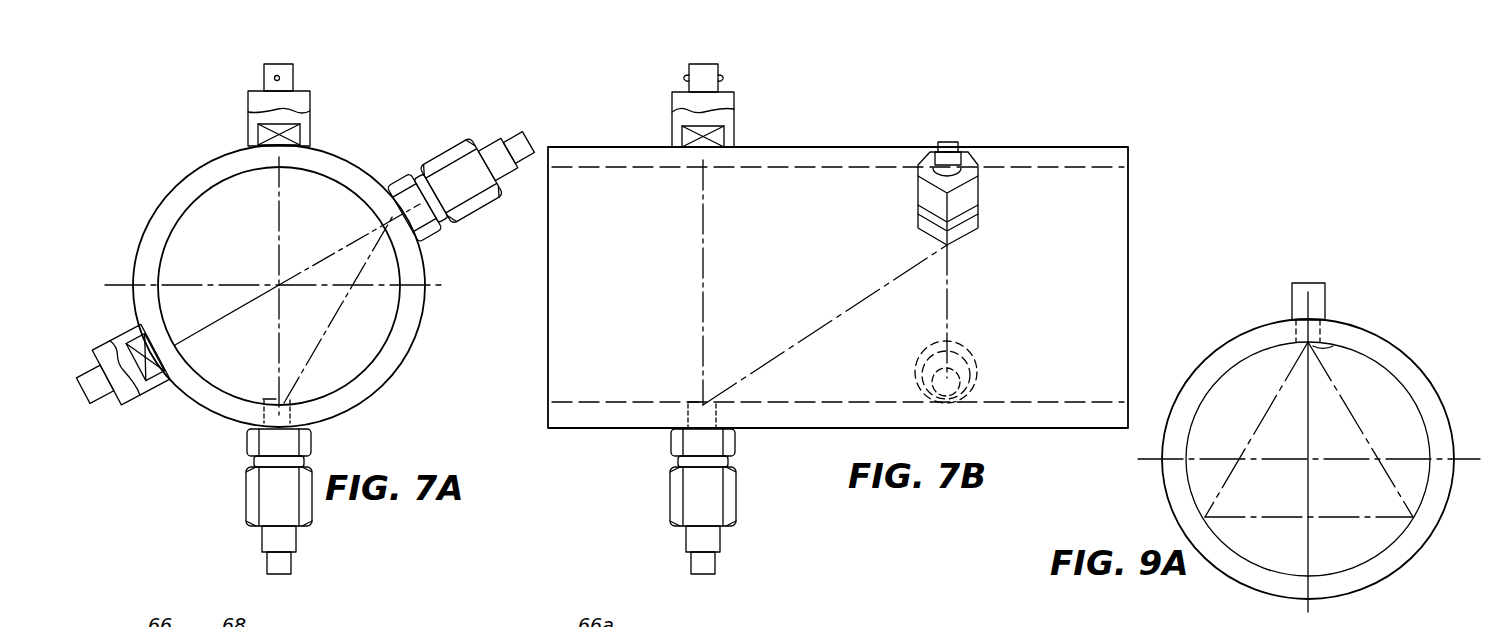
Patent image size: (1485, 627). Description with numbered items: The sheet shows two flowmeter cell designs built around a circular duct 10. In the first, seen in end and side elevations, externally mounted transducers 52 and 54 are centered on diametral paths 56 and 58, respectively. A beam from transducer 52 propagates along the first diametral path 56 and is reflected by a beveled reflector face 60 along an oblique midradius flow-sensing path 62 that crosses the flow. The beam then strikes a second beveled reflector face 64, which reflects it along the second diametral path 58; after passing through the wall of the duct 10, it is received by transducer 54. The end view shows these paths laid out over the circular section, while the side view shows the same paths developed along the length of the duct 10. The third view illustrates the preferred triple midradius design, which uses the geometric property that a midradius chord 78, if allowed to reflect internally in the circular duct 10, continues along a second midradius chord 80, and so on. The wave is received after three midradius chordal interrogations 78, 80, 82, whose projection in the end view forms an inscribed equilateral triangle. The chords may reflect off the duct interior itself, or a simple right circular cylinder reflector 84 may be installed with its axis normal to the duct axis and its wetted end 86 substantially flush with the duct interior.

In FIG. 7A, the duct 10 is at (216, 406).
In FIG. 7B, the duct 10 is at (548, 362).
In FIG. 9A, the duct 10 is at (1436, 536).
In FIG. 7A, the externally mounted transducer 52 is at (248, 138).
In FIG. 7B, the externally mounted transducer 52 is at (672, 138).
In FIG. 7A, the externally mounted transducer 54 is at (134, 334).
In FIG. 7B, the externally mounted transducer 54 is at (968, 358).
In FIG. 7A, the diametral path 56 is at (278, 198).
In FIG. 7B, the diametral path 56 is at (703, 212).
In FIG. 7A, the second diametral path 58 is at (204, 325).
In FIG. 7B, the second diametral path 58 is at (947, 284).
In FIG. 7A, the beveled reflector face 60 is at (267, 398).
In FIG. 7B, the beveled reflector face 60 is at (698, 398).
In FIG. 7A, the oblique midradius flow-sensing path 62 is at (342, 298).
In FIG. 7B, the oblique midradius flow-sensing path 62 is at (840, 310).
In FIG. 7A, the second beveled reflector face 64 is at (376, 220).
In FIG. 7B, the second beveled reflector face 64 is at (948, 193).
In FIG. 9A, the midradius chord 78 is at (1259, 428).
In FIG. 9A, the second midradius chord 80 is at (1360, 426).
In FIG. 9A, the midradius chord 82 is at (1328, 517).
In FIG. 9A, the right circular cylinder reflector 84 is at (1324, 296).
In FIG. 9A, the wetted end 86 is at (1330, 346).